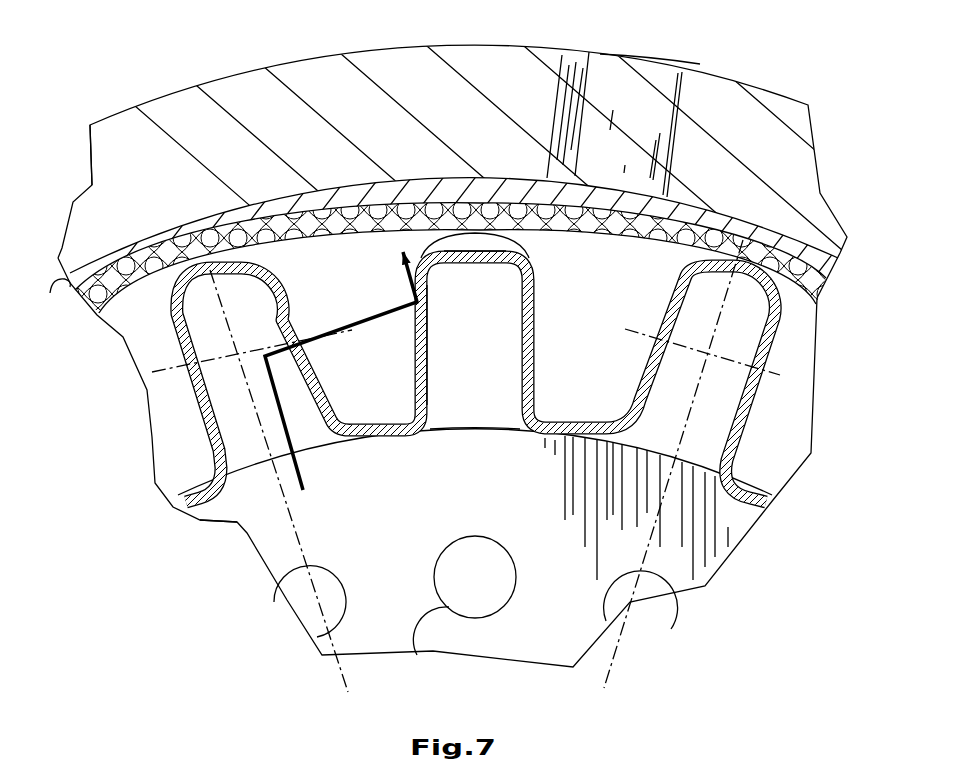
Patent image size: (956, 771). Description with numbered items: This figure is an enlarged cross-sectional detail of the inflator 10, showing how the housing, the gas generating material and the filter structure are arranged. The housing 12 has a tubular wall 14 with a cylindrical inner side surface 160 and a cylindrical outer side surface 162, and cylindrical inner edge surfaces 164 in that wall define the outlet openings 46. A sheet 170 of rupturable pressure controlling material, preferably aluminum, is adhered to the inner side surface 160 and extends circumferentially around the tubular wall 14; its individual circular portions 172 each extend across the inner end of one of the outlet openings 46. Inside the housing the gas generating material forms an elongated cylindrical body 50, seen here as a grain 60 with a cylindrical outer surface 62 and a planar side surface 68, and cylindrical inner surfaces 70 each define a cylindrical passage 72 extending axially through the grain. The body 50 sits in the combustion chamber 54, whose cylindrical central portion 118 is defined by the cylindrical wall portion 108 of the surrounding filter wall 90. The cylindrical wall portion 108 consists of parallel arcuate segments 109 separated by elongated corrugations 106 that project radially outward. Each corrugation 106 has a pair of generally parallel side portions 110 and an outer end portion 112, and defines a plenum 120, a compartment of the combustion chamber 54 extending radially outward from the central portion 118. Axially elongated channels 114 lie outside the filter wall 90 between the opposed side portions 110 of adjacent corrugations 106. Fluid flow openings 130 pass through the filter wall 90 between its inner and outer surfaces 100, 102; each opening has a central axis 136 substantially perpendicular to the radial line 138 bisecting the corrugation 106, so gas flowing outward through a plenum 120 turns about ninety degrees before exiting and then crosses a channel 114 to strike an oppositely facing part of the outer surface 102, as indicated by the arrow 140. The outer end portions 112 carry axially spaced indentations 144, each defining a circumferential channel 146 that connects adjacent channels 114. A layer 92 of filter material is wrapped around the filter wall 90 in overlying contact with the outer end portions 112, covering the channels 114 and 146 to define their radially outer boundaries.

The inflator 10 is at (250, 42).
The housing 12 is at (153, 100).
The tubular wall 14 is at (218, 133).
The outlet openings 46 is at (648, 58).
The elongated cylindrical body 50 is at (228, 534).
The combustion chamber 54 is at (463, 521).
The grain 60 is at (280, 541).
The cylindrical outer surface 62 is at (440, 428).
The second planar side surface 68 is at (273, 560).
The cylindrical inner surfaces 70 is at (275, 604).
The cylindrical passage 72 is at (339, 619).
The filter wall 90 is at (168, 492).
The layer of filter material 92 is at (270, 330).
The inner surface 100 is at (425, 312).
The outer surface 102 is at (414, 328).
The corrugations 106 is at (166, 287).
The cylindrical wall portion 108 is at (180, 486).
The arcuate segments 109 is at (378, 441).
The side portions 110 is at (320, 402).
The outer end portion 112 is at (200, 255).
The axially elongated channels 114 is at (300, 289).
The central portion 118 is at (500, 450).
The plenum 120 is at (226, 458).
The fluid flow openings 130 is at (176, 365).
The central axes 136 is at (172, 380).
The radial line 138 is at (342, 673).
The arrow 140 is at (341, 371).
The indentations 144 is at (490, 256).
The circumferentially extending channel 146 is at (512, 238).
The cylindrical inner side surface 160 is at (78, 325).
The cylindrical outer side surface 162 is at (123, 110).
The cylindrical inner edge surfaces 164 is at (555, 107).
The sheet of rupturable pressure controlling material 170 is at (443, 176).
The circular portions 172 is at (598, 200).